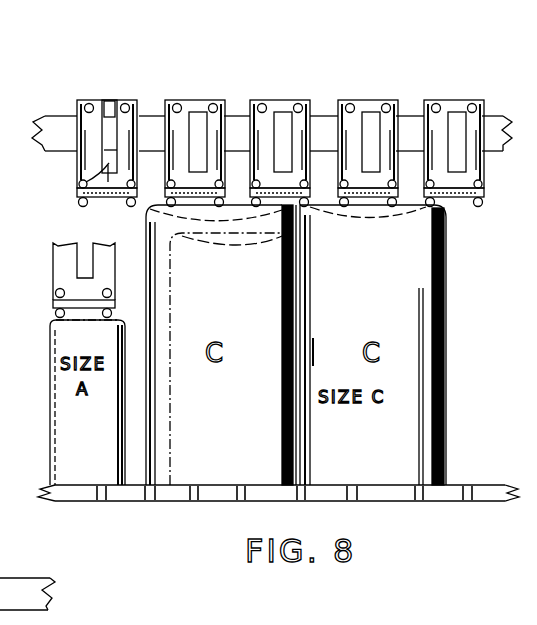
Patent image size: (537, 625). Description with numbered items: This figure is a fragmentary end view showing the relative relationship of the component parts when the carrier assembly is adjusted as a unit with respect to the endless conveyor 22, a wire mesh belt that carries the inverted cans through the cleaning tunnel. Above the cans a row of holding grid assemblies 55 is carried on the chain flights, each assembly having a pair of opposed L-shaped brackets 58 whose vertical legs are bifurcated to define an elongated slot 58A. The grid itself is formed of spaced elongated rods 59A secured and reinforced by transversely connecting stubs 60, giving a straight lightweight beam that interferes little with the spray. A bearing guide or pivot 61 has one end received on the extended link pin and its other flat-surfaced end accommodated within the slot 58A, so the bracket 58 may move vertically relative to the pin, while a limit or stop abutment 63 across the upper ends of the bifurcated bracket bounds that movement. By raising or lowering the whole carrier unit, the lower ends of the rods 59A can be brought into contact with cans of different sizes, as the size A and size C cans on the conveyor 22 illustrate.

The endless conveyor 22 is at (100, 486).
The clamping modules 55 is at (229, 115).
The L-shaped bracket 58 is at (68, 117).
The elongated slot 58A is at (79, 184).
The elongated rods 59A is at (79, 203).
The transversely connecting stubs 60 is at (120, 199).
The bearing guide or pivot 61 is at (111, 120).
The limit or stop abutment 63 is at (106, 102).